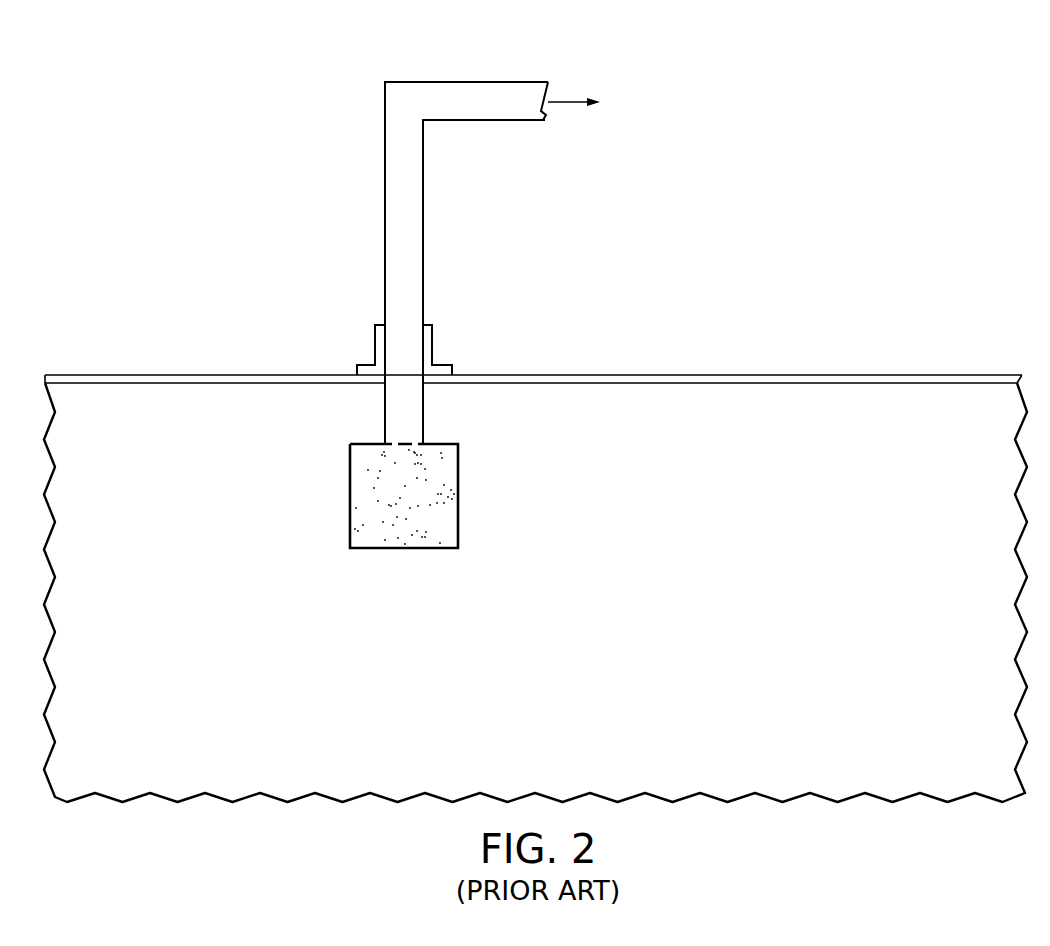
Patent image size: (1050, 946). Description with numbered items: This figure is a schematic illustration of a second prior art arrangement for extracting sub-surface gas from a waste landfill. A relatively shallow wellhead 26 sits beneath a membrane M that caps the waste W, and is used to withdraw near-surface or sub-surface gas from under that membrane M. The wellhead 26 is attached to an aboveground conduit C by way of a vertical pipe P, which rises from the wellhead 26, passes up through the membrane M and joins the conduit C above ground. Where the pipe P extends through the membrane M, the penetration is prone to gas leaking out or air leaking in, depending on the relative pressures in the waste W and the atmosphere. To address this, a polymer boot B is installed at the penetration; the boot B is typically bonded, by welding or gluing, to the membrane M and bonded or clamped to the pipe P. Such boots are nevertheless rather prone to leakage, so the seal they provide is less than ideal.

The aboveground conduit C is at (488, 82).
The pipe P is at (412, 220).
The polymer boot B is at (375, 347).
The membrane M is at (812, 377).
The waste W is at (706, 614).
The wellhead 26 is at (472, 492).